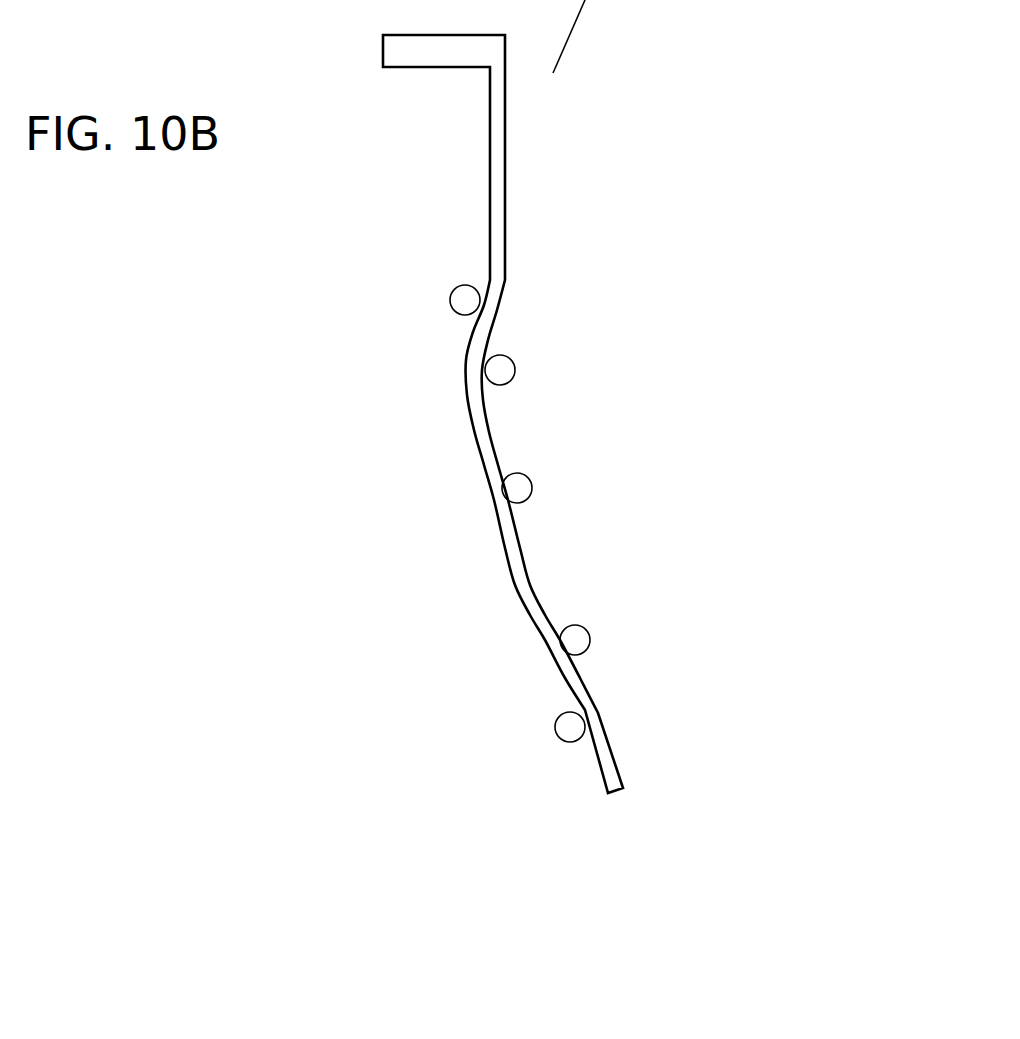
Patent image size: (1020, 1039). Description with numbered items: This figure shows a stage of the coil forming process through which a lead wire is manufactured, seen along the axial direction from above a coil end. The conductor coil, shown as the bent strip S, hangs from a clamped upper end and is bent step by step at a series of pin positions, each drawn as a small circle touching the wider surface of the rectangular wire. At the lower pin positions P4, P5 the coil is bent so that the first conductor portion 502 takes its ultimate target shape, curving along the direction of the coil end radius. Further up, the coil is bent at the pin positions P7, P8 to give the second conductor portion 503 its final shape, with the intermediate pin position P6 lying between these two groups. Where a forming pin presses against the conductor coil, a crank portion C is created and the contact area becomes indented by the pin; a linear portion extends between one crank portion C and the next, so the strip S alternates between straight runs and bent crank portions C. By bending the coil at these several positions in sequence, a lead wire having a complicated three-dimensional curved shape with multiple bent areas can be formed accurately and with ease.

The sheet S is at (500, 155).
The second conductor portion 503 is at (493, 230).
The first conductor portion 502 is at (512, 548).
The crank portion C is at (480, 347).
The pin position P4 is at (570, 735).
The pin position P5 is at (589, 638).
The pin position P6 is at (529, 477).
The pin position P7 is at (513, 361).
The pin position P8 is at (454, 291).